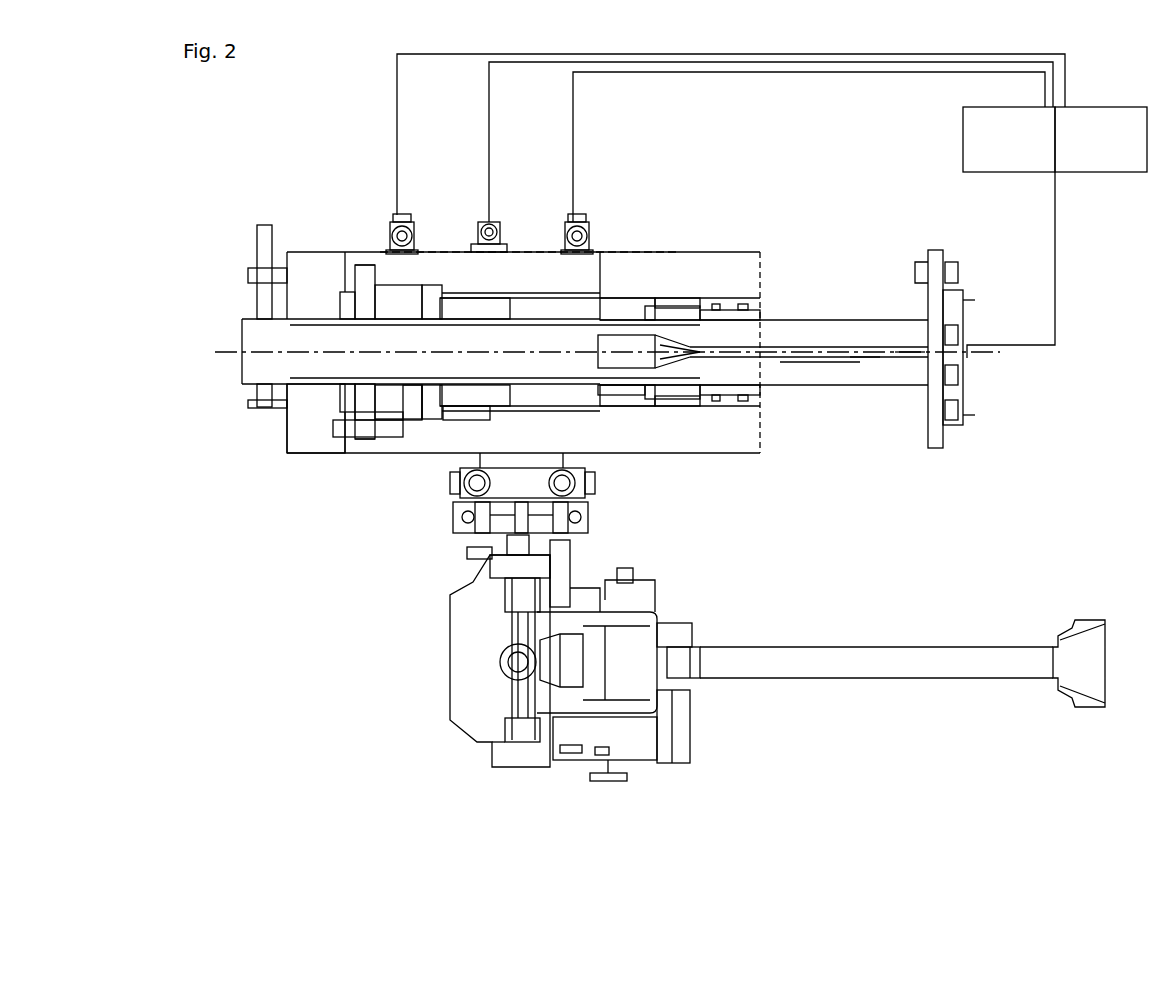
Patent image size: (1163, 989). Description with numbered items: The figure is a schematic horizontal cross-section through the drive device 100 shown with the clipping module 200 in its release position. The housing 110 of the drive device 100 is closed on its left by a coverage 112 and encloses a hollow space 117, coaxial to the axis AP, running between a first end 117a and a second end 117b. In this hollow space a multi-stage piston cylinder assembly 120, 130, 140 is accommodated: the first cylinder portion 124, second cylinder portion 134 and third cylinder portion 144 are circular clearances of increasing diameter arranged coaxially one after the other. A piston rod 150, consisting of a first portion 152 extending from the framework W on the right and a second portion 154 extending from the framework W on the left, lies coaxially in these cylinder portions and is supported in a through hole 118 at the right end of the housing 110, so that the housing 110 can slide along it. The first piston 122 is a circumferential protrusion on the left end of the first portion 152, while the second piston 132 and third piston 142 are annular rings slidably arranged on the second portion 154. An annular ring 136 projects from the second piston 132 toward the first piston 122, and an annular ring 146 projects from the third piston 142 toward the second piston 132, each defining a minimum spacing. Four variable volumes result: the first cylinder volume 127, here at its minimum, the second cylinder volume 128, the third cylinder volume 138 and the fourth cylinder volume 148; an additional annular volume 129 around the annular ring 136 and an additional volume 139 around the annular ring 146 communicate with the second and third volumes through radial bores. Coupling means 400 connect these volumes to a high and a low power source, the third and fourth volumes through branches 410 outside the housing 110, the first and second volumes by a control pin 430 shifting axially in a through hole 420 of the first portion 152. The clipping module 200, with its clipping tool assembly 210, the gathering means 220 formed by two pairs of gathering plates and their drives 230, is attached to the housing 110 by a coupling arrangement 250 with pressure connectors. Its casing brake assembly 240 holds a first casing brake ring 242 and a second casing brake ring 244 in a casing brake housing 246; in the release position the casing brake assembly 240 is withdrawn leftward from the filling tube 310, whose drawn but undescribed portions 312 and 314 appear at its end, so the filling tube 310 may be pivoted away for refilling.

The drive device 100 is at (882, 128).
The housing 110 is at (735, 267).
The coverage 112 is at (302, 423).
The hollow space 117 is at (573, 312).
The first end of hollow space 117a is at (342, 303).
The second end of hollow space 117b is at (693, 300).
The through hole 118 is at (727, 310).
The piston cylinder assembly 120 is at (690, 196).
The first piston 122 is at (673, 322).
The first cylinder portion 124 is at (618, 297).
The first cylinder volume 127 is at (692, 407).
The second cylinder volume 128 is at (602, 397).
The additional annular volume 129 is at (465, 413).
The piston cylinder assembly 130 is at (440, 160).
The second piston 132 is at (430, 286).
The second cylinder portion 134 is at (463, 292).
The annular ring 136 is at (488, 300).
The third cylinder volume 138 is at (410, 397).
The additional volume 139 is at (383, 433).
The piston cylinder assembly 140 is at (288, 182).
The third piston 142 is at (363, 295).
The third cylinder portion 144 is at (367, 262).
The annular ring 146 is at (395, 290).
The fourth cylinder volume 148 is at (347, 407).
The piston rod 150 is at (912, 232).
The first portion of piston rod 152 is at (863, 328).
The second portion of piston rod 154 is at (242, 380).
The clipping module 200 is at (375, 752).
The clipping tool assembly 210 is at (510, 662).
The gathering means 220 is at (520, 623).
The drives 230 is at (452, 717).
The casing brake assembly 240 is at (725, 775).
The first casing brake ring 242 is at (570, 660).
The second casing brake ring 244 is at (550, 658).
The casing brake housing 246 is at (660, 730).
The coupling arrangement 250 is at (600, 518).
The filling tube 310 is at (912, 655).
The rod head 312 is at (1030, 657).
The rod end 314 is at (677, 658).
The coupling means 400 is at (375, 105).
The branches 410 is at (400, 224).
The through hole 420 is at (820, 362).
The control pin 430 is at (865, 358).
The axis AP is at (908, 357).
The framework W is at (265, 252).